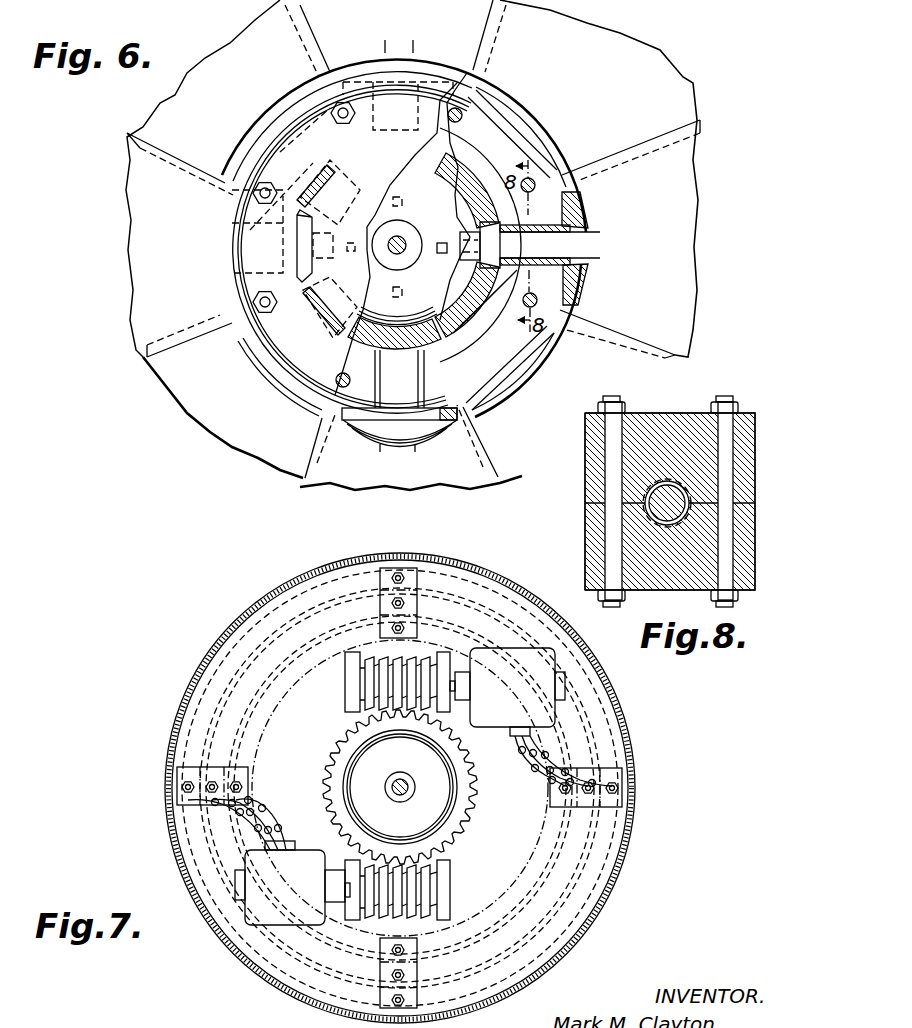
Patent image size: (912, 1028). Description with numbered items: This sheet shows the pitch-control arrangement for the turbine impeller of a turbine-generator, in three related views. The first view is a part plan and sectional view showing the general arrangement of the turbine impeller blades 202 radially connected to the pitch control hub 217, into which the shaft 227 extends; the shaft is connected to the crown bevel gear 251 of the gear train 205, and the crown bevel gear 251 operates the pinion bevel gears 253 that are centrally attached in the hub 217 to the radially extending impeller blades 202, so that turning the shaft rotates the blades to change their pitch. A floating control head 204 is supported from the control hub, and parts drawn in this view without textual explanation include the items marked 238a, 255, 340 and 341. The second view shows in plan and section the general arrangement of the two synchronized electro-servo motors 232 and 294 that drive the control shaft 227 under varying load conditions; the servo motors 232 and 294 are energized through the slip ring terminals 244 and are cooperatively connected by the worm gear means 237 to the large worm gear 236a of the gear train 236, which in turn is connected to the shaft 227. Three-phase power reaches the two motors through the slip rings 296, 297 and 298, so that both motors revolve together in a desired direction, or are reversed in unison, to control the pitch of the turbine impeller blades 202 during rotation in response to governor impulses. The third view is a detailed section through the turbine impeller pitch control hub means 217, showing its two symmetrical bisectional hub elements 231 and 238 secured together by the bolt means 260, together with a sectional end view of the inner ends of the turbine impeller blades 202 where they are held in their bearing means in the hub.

In FIG. 6, the turbine impeller blades 202 is at (150, 348).
In FIG. 8, the turbine impeller blades 202 is at (650, 510).
In FIG. 7, the floating control head 204 is at (633, 823).
In FIG. 6, the gear train 205 is at (438, 135).
In FIG. 6, the pitch control hub 217 is at (252, 215).
In FIG. 8, the pitch control hub 217 is at (768, 399).
In FIG. 6, the shaft 227 is at (390, 243).
In FIG. 7, the shaft 227 is at (397, 798).
In FIG. 6, the bisectional hub element 231 is at (260, 260).
In FIG. 8, the bisectional hub element 231 is at (597, 467).
In FIG. 7, the servo motor 232 is at (507, 692).
In FIG. 7, the gear train 236 is at (318, 778).
In FIG. 7, the central worm gear 236a is at (343, 740).
In FIG. 7, the gear worm 237 is at (375, 698).
In FIG. 8, the bisectional hub element 238 is at (598, 543).
In FIG. 6, the plate 238a is at (467, 403).
In FIG. 7, the slip ring terminals 244 is at (248, 795).
In FIG. 6, the crown bevel gear 251 is at (387, 300).
In FIG. 6, the pinion bevel gears 253 is at (482, 174).
In FIG. 6, the shoe segment 255 is at (267, 383).
In FIG. 6, the bolt means 260 is at (253, 303).
In FIG. 8, the bolt means 260 is at (713, 410).
In FIG. 7, the servo motor 294 is at (292, 883).
In FIG. 7, the slip ring 296 is at (547, 842).
In FIG. 7, the slip ring 297 is at (563, 875).
In FIG. 7, the slip ring 298 is at (577, 900).
In FIG. 6, the arcuate segment 340 is at (230, 349).
In FIG. 6, the clamp flange 341 is at (303, 392).